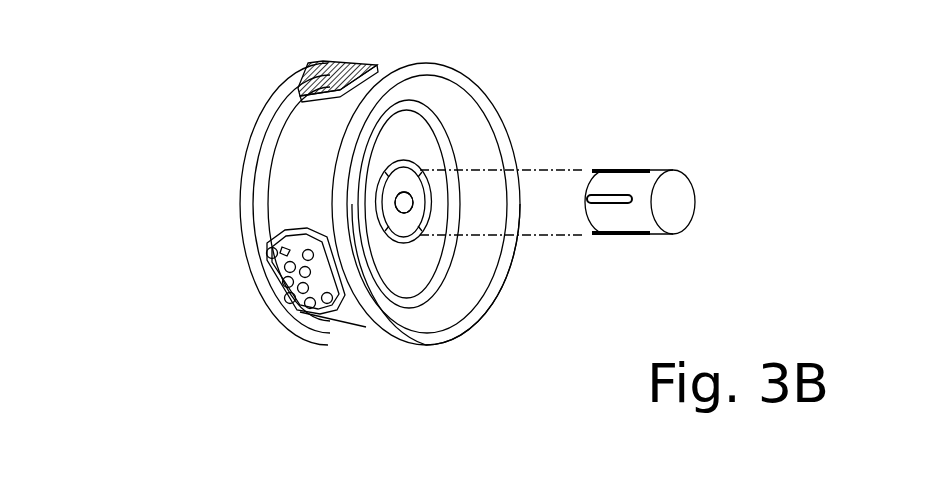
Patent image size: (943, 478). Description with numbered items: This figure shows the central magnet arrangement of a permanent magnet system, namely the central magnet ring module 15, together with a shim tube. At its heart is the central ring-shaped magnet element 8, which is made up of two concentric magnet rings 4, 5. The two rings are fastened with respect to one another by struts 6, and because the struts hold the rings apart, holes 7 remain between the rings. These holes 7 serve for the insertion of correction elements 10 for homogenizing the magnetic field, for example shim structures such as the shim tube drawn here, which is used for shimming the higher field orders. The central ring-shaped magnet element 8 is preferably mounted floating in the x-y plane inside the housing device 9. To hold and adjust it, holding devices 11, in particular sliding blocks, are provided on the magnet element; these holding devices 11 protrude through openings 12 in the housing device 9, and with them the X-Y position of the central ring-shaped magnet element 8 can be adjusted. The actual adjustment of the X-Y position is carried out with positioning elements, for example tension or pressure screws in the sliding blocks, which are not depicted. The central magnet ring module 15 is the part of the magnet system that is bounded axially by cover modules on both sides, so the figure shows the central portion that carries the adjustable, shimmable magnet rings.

The concentric magnet ring 4 is at (410, 217).
The concentric magnet ring 5 is at (420, 145).
The strut 6 is at (425, 180).
The hole 7 is at (428, 198).
The central ring-shaped magnet element 8 is at (486, 355).
The housing device 9 is at (440, 63).
The correction element 10 is at (637, 221).
The holding device 11 is at (268, 243).
The opening 12 is at (344, 300).
The central magnet ring module 15 is at (218, 189).